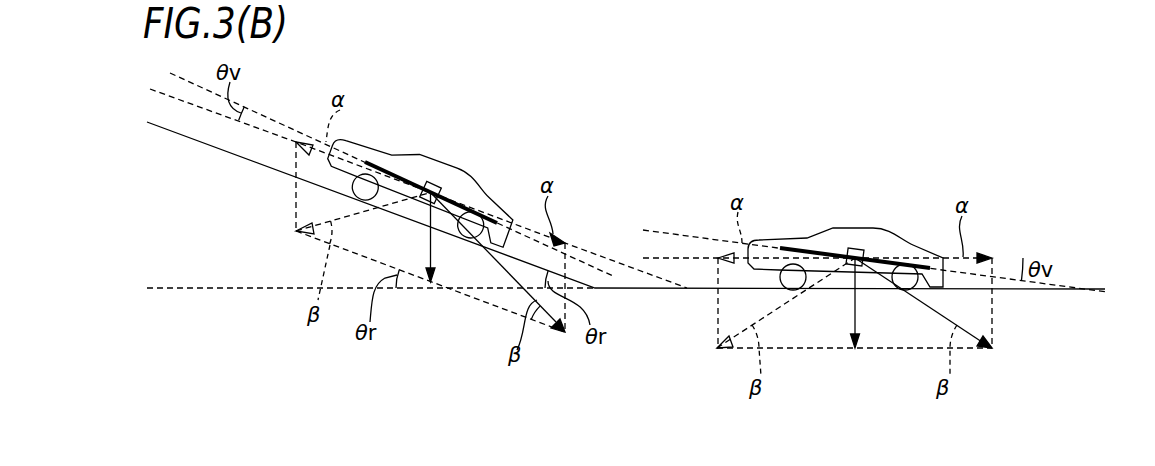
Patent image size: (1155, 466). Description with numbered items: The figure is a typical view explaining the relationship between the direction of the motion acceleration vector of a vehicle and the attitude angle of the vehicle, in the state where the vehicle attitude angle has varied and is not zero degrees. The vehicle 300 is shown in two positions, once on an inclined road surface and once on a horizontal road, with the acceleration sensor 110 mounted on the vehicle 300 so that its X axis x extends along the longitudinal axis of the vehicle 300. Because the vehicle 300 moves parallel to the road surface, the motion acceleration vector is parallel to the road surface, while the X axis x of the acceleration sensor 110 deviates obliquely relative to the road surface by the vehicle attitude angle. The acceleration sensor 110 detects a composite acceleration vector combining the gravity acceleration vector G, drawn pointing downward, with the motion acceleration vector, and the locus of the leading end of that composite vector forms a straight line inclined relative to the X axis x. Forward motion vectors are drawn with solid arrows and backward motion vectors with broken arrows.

The acceleration sensor 110 is at (428, 180).
The vehicle 300 is at (470, 181).
The X axis x is at (452, 196).
The gravity acceleration vector G is at (432, 254).